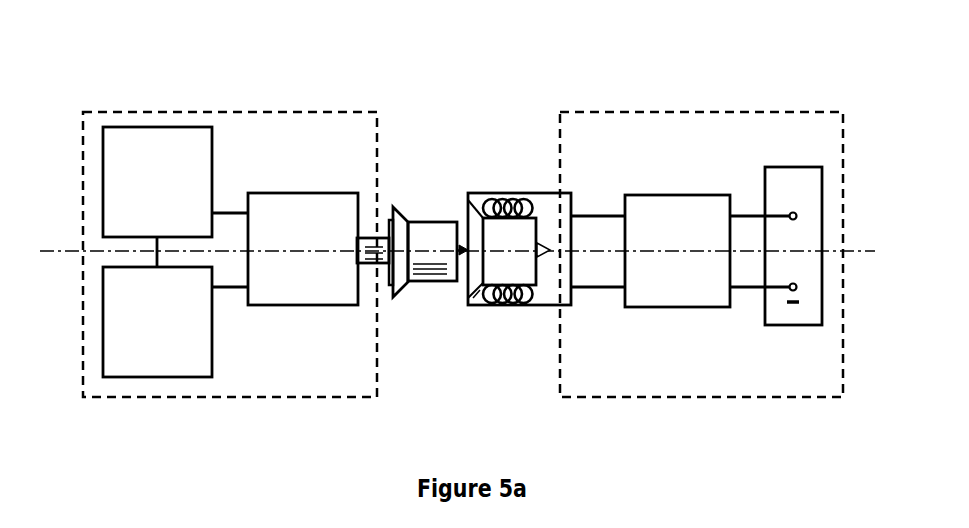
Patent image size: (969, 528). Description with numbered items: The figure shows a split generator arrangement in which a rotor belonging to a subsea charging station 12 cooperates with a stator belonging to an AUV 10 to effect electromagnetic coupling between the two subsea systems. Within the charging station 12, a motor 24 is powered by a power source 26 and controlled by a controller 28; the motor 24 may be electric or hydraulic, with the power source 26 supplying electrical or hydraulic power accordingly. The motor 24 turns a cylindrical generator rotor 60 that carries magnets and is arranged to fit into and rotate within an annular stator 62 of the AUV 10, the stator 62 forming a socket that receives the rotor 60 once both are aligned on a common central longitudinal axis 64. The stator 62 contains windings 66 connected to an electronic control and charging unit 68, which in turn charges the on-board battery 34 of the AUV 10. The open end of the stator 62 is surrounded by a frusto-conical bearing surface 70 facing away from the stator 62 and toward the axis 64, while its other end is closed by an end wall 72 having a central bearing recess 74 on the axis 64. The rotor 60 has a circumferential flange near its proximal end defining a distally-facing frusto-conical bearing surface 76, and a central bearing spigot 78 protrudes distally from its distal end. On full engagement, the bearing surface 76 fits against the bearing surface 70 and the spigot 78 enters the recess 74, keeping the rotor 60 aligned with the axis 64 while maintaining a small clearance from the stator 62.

The AUV 10 is at (799, 110).
The charging station 12 is at (141, 110).
The motor 24 is at (289, 236).
The power source 26 is at (143, 190).
The controller 28 is at (143, 330).
The on-board battery 34 is at (813, 264).
The generator rotor 60 is at (427, 233).
The stator 62 is at (502, 193).
The central longitudinal axis 64 is at (55, 252).
The windings 66 is at (501, 305).
The electronic control and charging unit 68 is at (663, 236).
The frusto-conical bearing surface 70 is at (476, 290).
The end wall 72 is at (552, 272).
The central bearing recess 74 is at (537, 250).
The frusto-conical bearing surface 76 is at (402, 230).
The central bearing spigot 78 is at (526, 273).